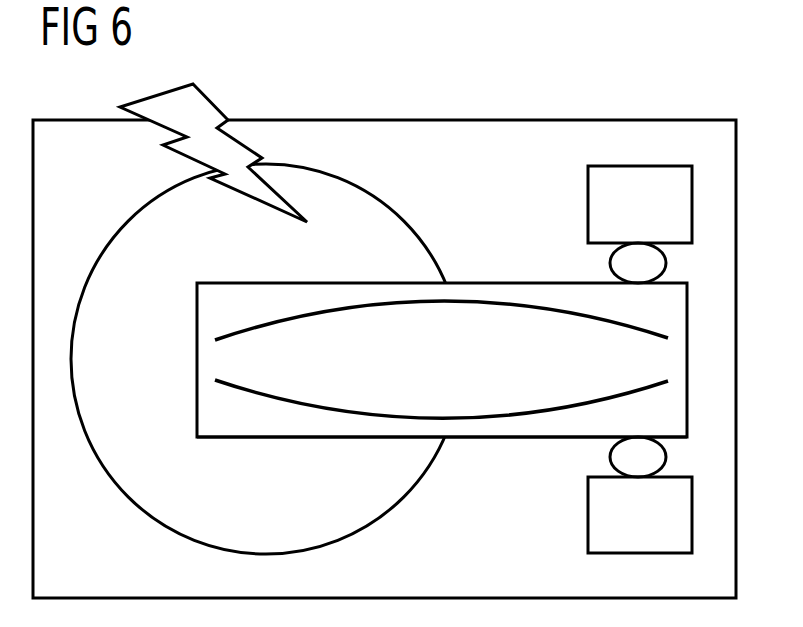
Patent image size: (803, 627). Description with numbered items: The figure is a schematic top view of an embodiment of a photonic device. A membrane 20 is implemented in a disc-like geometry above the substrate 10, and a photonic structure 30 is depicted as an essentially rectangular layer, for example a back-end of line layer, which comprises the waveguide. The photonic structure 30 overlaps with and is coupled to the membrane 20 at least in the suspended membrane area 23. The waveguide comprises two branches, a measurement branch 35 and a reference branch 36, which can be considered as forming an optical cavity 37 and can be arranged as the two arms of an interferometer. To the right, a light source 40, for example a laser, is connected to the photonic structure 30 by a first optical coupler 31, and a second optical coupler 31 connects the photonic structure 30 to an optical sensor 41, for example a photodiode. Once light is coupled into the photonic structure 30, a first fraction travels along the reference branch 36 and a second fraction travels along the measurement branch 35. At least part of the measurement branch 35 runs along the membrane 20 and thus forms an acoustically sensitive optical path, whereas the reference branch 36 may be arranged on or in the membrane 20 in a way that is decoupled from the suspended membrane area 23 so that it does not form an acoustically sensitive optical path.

The substrate 10 is at (470, 120).
The membrane 20 is at (380, 522).
The suspended membrane area 23 is at (280, 437).
The photonic structure 30 is at (197, 361).
The optical coupler 31 is at (660, 268).
The measurement branch 35 is at (557, 413).
The reference branch 36 is at (513, 300).
The optical cavity 37 is at (441, 364).
The light source 40 is at (596, 188).
The optical sensor 41 is at (598, 528).